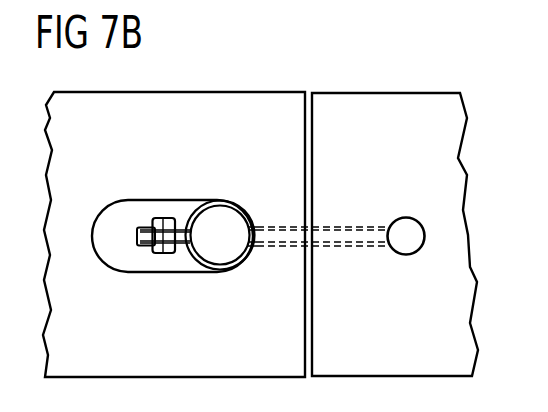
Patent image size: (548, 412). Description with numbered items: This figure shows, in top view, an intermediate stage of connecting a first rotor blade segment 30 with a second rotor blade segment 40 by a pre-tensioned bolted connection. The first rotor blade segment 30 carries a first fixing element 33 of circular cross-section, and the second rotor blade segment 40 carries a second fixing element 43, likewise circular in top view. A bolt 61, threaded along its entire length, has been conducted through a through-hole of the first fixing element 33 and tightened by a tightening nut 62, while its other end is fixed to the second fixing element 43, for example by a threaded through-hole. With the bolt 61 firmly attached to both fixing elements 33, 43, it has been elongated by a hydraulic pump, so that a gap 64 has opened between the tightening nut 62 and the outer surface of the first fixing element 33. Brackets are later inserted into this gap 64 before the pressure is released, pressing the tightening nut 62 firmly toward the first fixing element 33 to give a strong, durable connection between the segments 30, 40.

The first rotor blade segment 30 is at (271, 101).
The second rotor blade segment 40 is at (371, 102).
The first fixing element 33 is at (224, 218).
The bolt 61 is at (146, 234).
The tightening nut 62 is at (165, 222).
The gap 64 is at (182, 250).
The second fixing element 43 is at (404, 228).